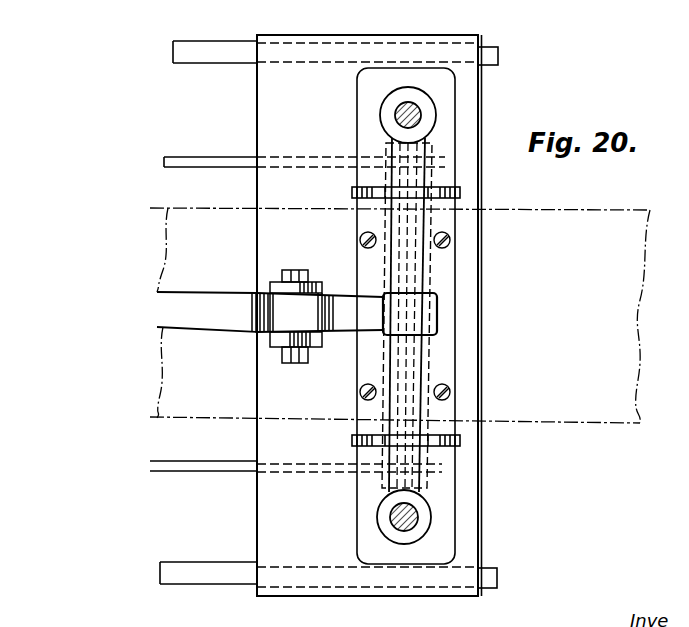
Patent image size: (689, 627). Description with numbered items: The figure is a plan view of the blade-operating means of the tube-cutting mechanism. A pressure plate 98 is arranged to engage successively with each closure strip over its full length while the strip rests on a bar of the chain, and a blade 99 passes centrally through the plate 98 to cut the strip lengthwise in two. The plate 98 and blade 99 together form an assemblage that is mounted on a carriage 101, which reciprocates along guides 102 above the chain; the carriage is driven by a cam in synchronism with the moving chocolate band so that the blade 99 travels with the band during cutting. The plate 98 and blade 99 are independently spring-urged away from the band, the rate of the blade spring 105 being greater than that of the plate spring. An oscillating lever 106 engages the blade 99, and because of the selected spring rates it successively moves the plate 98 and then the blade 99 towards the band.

The pressure plate 98 is at (397, 273).
The blade 99 is at (405, 371).
The carriage 101 is at (478, 111).
The guides 102 is at (498, 53).
The blade spring 105 is at (460, 194).
The oscillating lever 106 is at (337, 295).